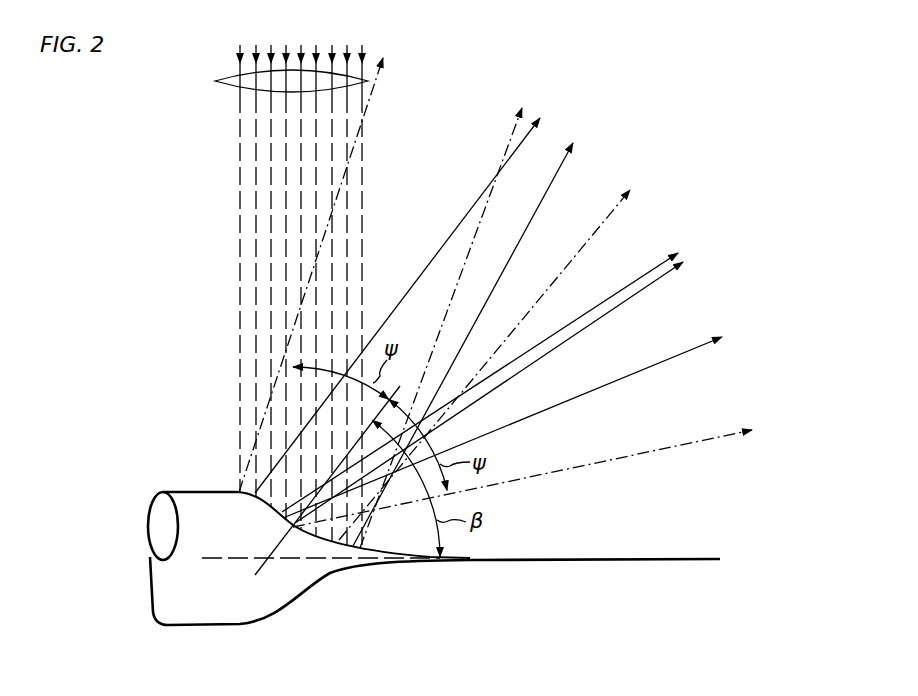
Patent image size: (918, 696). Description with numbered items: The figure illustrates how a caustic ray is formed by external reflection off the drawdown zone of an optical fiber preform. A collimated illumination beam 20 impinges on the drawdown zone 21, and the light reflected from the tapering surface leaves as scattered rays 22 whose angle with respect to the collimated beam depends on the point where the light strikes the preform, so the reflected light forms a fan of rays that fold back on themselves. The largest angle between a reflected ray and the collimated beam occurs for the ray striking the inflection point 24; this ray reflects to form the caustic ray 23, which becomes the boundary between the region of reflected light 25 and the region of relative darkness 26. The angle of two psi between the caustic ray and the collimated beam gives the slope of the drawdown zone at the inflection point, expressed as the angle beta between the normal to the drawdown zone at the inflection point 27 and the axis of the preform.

The collimated illumination beam 20 is at (215, 81).
The drawdown zone 21 is at (315, 578).
The scattered rays 22 is at (607, 217).
The caustic ray 23 is at (734, 437).
The inflection point 24 is at (290, 525).
The region of reflected light 25 is at (448, 154).
The region of relative darkness 26 is at (733, 522).
The normal to the drawdown zone at the inflection point 27 is at (258, 567).